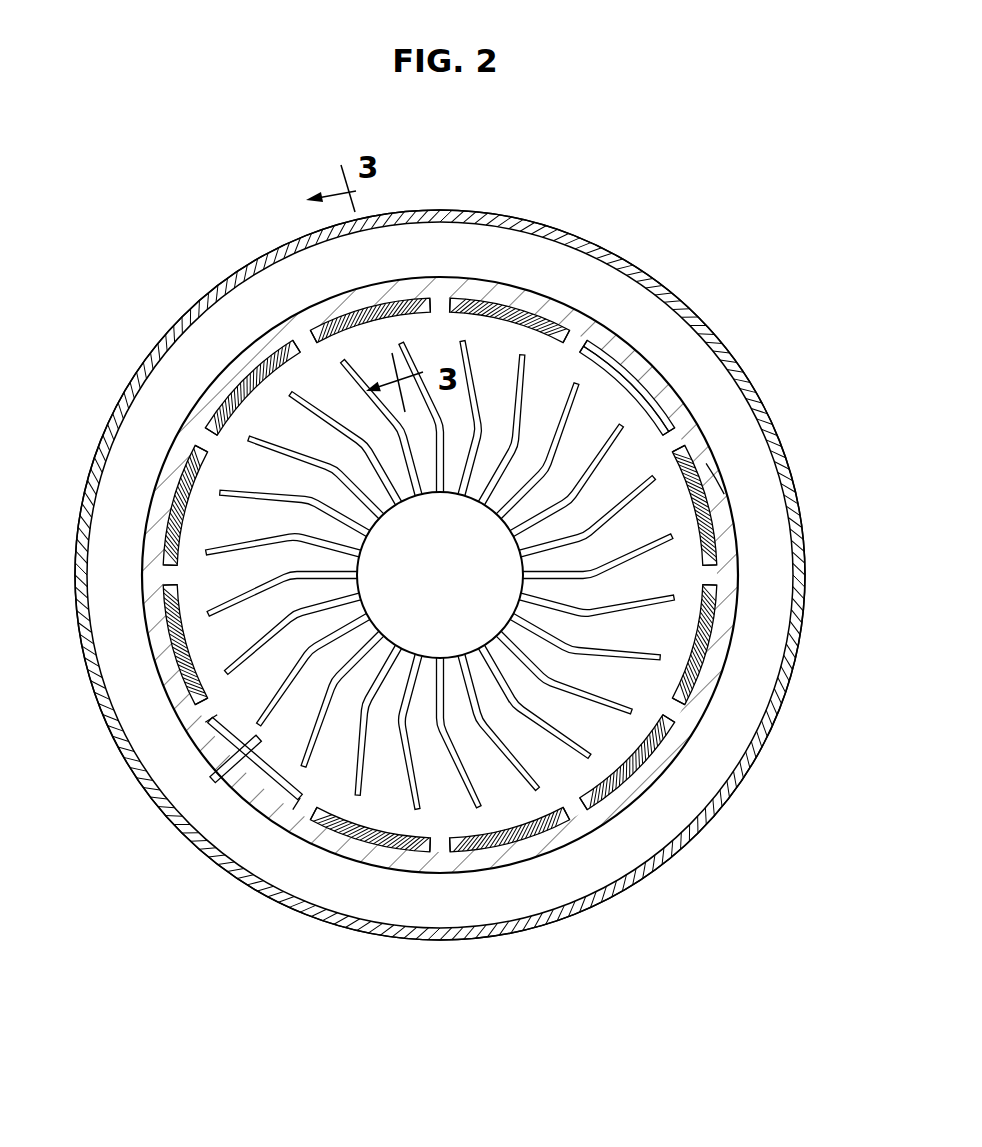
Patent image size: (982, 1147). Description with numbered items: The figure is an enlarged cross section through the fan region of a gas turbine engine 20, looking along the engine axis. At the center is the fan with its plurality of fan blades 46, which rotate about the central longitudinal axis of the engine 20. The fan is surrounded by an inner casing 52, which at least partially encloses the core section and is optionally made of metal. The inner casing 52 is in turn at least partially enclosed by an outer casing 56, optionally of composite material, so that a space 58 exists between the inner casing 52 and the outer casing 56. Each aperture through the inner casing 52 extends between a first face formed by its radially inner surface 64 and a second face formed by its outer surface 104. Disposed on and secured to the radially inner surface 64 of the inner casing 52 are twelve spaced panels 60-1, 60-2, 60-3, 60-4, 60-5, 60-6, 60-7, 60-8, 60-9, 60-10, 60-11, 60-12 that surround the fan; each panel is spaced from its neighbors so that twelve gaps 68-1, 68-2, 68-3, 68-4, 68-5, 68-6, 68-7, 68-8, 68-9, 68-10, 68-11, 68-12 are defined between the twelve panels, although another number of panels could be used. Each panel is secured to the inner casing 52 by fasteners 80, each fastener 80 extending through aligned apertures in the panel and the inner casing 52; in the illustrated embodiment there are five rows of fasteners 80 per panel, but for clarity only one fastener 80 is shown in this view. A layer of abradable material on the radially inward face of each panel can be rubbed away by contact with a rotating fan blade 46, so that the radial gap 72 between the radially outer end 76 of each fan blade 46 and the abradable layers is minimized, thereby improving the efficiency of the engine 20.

The gas turbine engine 20 is at (115, 104).
The fan blades 46 is at (585, 340).
The inner casing 52 is at (700, 322).
The outer casing 56 is at (623, 340).
The space 58 is at (658, 323).
The panel 60-1 is at (330, 318).
The panel 60-2 is at (475, 320).
The panel 60-3 is at (631, 384).
The panel 60-4 is at (677, 457).
The panel 60-5 is at (701, 645).
The panel 60-6 is at (631, 766).
The panel 60-7 is at (510, 836).
The panel 60-8 is at (370, 836).
The panel 60-9 is at (255, 758).
The panel 60-10 is at (179, 645).
The panel 60-11 is at (177, 455).
The panel 60-12 is at (262, 362).
The radially inner surface 64 is at (697, 473).
The gap 68-1 is at (440, 305).
The gap 68-2 is at (583, 352).
The gap 68-3 is at (674, 440).
The gap 68-4 is at (710, 575).
The gap 68-5 is at (674, 710).
The gap 68-6 is at (575, 809).
The gap 68-7 is at (440, 845).
The gap 68-8 is at (305, 809).
The gap 68-9 is at (206, 710).
The gap 68-10 is at (170, 575).
The gap 68-11 is at (206, 440).
The gap 68-12 is at (305, 341).
The radial gap 72 is at (485, 378).
The radially outer end 76 is at (466, 345).
The fastener 80 is at (212, 795).
The outer surface 104 is at (727, 480).